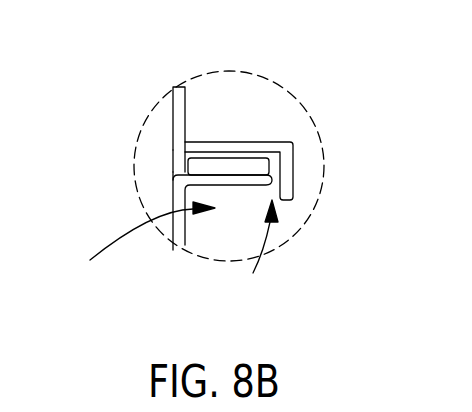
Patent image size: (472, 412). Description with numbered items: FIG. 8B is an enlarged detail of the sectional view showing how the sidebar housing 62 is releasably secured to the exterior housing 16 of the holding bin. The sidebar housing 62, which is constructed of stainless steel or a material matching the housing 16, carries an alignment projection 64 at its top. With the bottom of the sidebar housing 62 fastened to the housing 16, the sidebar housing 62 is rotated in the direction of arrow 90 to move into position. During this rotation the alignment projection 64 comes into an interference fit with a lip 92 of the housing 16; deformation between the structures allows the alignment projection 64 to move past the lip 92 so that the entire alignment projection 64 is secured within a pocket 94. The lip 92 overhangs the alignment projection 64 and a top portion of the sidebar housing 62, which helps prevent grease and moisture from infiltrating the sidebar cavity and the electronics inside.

The housing 16 is at (173, 100).
The lip 92 is at (173, 160).
The sidebar housing 62 is at (173, 200).
The alignment projection 64 is at (221, 168).
The arrow 90 is at (148, 222).
The pocket 94 is at (261, 256).